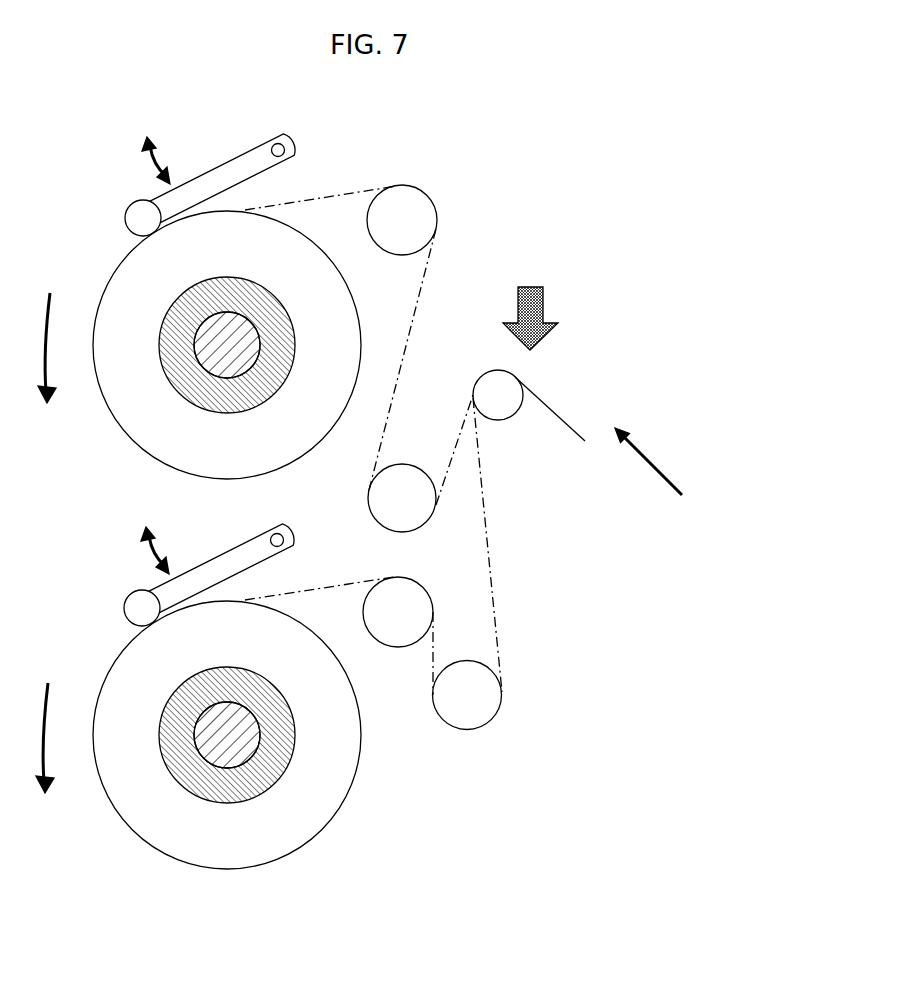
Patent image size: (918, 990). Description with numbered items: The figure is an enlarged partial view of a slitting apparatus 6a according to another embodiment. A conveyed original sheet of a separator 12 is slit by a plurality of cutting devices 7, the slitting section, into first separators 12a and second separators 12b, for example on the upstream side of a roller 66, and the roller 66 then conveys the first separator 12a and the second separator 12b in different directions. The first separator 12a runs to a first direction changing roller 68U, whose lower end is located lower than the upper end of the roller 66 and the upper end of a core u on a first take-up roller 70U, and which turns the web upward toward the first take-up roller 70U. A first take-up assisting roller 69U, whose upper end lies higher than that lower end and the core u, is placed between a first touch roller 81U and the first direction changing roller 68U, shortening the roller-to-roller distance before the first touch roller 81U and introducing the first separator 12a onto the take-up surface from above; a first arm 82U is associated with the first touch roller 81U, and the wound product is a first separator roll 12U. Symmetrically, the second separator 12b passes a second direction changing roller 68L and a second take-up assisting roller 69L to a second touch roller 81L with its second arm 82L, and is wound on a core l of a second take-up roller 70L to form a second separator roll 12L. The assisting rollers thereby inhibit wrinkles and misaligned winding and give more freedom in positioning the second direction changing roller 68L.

The slitting apparatus 6a is at (620, 133).
The cutting device 7 is at (518, 305).
The separator 12 is at (552, 409).
The first separator 12a is at (343, 195).
The second separator 12b is at (305, 590).
The first separator roll 12U is at (138, 278).
The second separator roll 12L is at (138, 668).
The roller 66 is at (503, 416).
The first direction changing roller 68U is at (411, 524).
The second direction changing roller 68L is at (481, 725).
The first take-up assisting roller 69U is at (425, 205).
The second take-up assisting roller 69L is at (416, 593).
The first take-up roller 70U is at (205, 355).
The second take-up roller 70L is at (205, 745).
The first touch roller 81U is at (135, 210).
The second touch roller 81L is at (135, 600).
The first arm 82U is at (222, 168).
The second arm 82L is at (222, 558).
The core u is at (170, 358).
The core l is at (170, 748).